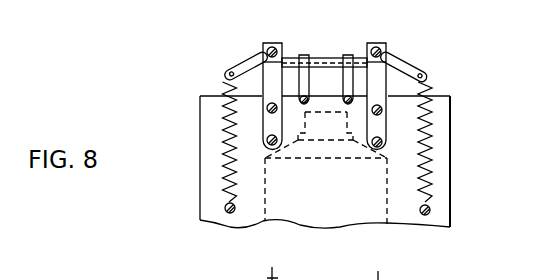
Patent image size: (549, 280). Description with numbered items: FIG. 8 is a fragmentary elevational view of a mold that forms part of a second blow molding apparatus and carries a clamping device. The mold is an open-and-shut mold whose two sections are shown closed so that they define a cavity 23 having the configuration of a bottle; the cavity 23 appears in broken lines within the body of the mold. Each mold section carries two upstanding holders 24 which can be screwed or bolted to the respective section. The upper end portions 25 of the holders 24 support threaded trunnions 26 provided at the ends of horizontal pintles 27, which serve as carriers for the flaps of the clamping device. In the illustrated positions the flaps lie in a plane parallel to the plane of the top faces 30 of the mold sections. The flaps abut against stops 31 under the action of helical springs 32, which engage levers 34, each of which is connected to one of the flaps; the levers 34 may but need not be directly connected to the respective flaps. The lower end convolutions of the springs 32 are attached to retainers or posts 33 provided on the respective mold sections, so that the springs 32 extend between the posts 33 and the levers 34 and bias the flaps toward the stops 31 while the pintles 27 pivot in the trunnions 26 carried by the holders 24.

The cavity 23 is at (387, 225).
The upstanding holders 24 is at (378, 123).
The upper end portions 25 is at (362, 58).
The threaded trunnions 26 is at (382, 45).
The horizontal pintles 27 is at (392, 50).
The top faces 30 is at (211, 96).
The stops 31 is at (307, 57).
The helical springs 32 is at (432, 163).
The retainers or posts 33 is at (431, 210).
The levers 34 is at (237, 65).